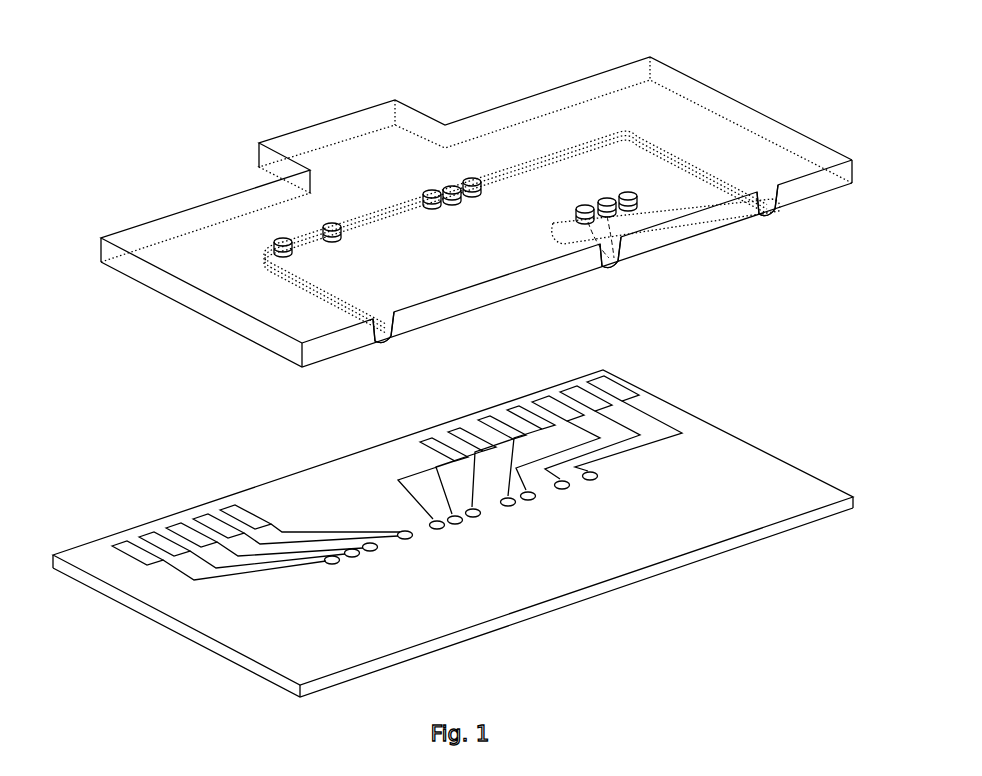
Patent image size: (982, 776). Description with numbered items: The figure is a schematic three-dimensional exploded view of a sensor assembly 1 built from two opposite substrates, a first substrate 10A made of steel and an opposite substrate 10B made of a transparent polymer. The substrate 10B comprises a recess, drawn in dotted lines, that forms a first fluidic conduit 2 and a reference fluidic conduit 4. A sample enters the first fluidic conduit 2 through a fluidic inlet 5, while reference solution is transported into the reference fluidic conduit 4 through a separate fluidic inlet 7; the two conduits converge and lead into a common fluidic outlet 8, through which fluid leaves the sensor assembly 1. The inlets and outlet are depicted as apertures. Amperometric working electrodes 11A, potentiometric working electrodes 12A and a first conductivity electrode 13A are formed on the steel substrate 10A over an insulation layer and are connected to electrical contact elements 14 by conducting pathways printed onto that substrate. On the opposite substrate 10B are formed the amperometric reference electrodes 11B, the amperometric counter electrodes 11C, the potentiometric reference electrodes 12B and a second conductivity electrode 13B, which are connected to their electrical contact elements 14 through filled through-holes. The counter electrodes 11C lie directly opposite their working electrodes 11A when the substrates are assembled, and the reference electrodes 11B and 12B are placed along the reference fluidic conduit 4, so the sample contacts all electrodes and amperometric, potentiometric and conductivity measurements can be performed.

The sensor assembly 1 is at (112, 152).
The second substrate 10B is at (240, 193).
The first substrate 10A is at (125, 530).
The first fluidic conduit 2 is at (377, 228).
The electrical contact elements 14 is at (590, 210).
The reference fluidic conduit 4 is at (650, 197).
The fluidic inlet 5 is at (383, 341).
The fluidic inlet 7 is at (610, 264).
The common fluidic outlet 8 is at (778, 208).
The second conductivity electrode 13B is at (298, 259).
The amperometric counter electrodes 11C is at (473, 197).
The amperometric reference electrodes 11B is at (605, 243).
The potentiometric reference electrodes 12B is at (612, 228).
The amperometric working electrodes 11A is at (340, 563).
The potentiometric working electrodes 12A is at (410, 538).
The first conductivity electrode 13A is at (597, 476).